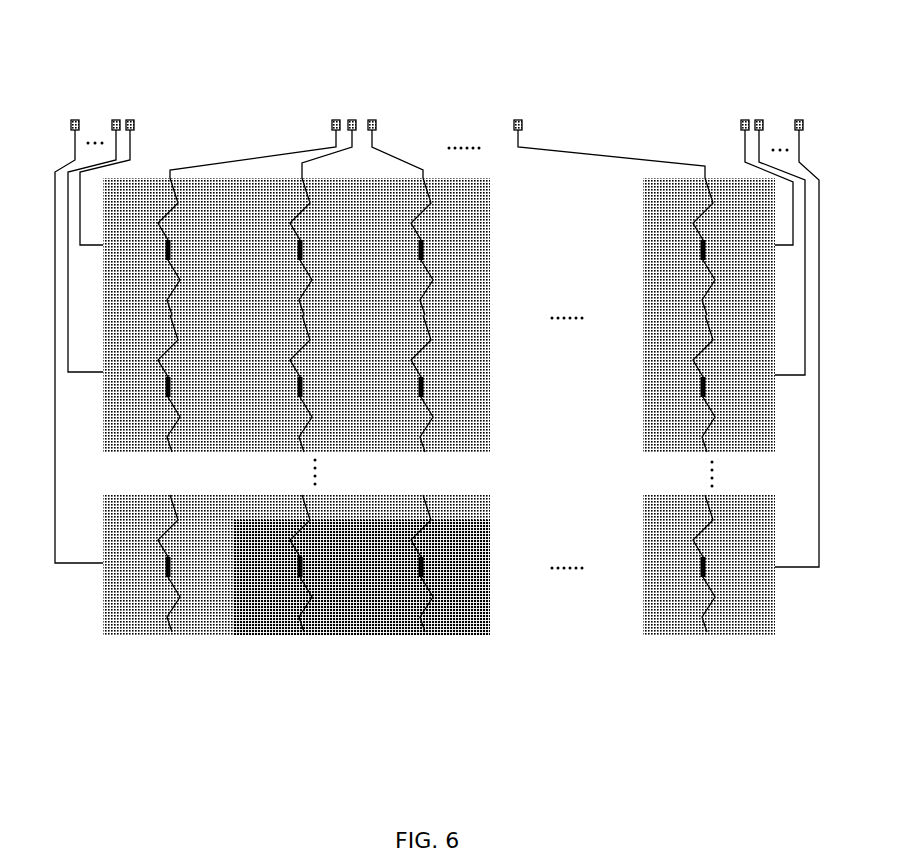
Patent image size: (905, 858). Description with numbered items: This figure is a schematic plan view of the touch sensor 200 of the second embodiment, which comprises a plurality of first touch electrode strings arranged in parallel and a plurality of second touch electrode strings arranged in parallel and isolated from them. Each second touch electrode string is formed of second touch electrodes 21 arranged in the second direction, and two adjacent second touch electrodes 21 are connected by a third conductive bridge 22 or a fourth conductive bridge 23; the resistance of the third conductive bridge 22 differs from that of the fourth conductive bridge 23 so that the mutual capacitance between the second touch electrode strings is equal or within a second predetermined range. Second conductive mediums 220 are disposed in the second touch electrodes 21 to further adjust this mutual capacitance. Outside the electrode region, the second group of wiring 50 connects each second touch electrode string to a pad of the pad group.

The touch sensor 200 is at (438, 52).
The second group of wiring 50 is at (312, 158).
The second touch electrode 21 is at (425, 607).
The third conductive bridge 22 is at (163, 565).
The fourth conductive bridge 23 is at (287, 568).
The second conductive medium 220 is at (308, 607).